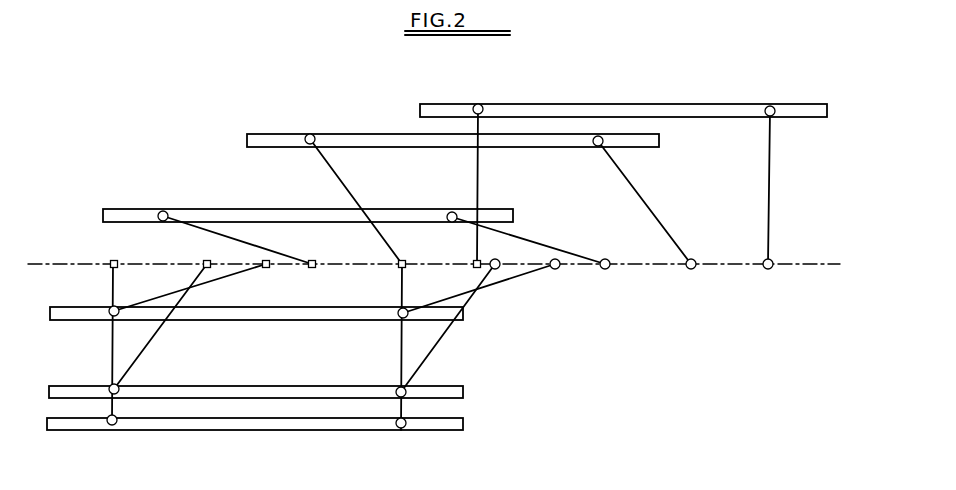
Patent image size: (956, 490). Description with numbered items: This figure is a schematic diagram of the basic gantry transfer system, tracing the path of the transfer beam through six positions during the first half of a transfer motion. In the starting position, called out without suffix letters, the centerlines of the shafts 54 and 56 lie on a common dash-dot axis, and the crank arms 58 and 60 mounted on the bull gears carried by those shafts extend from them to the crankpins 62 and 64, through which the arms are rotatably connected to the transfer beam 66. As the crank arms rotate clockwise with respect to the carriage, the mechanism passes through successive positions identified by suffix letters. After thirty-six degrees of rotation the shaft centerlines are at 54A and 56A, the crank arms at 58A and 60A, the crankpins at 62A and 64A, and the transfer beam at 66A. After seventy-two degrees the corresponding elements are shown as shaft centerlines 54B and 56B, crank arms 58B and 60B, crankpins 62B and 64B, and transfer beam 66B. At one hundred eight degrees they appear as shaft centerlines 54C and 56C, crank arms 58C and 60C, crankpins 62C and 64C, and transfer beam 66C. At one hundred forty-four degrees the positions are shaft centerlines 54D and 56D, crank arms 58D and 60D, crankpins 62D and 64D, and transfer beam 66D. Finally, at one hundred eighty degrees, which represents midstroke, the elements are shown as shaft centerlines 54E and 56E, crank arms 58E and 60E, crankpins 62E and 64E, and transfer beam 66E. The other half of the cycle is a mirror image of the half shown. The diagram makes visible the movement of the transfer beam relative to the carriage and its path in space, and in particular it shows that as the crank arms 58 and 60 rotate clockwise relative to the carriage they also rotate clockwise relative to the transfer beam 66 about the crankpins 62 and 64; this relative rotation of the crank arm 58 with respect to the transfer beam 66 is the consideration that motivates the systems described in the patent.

The shaft 54 is at (114, 259).
The shaft 54A is at (207, 259).
The shaft 54B is at (271, 266).
The shaft 54C is at (314, 270).
The shaft 54D is at (399, 262).
The shaft 54E is at (477, 270).
The shaft 56 is at (407, 262).
The shaft 56A is at (522, 246).
The shaft 56B is at (556, 270).
The shaft 56C is at (606, 270).
The shaft 56D is at (691, 270).
The shaft 56E is at (769, 270).
The crank arm 58 is at (111, 334).
The crank arm 58A is at (160, 329).
The crank arm 58B is at (227, 277).
The crank arm 58C is at (296, 258).
The crank arm 58D is at (346, 186).
The crank arm 58E is at (480, 183).
The crank arm 60 is at (399, 356).
The crank arm 60A is at (436, 347).
The crank arm 60B is at (508, 283).
The crank arm 60C is at (586, 257).
The crank arm 60D is at (656, 216).
The crank arm 60E is at (772, 190).
The crankpin 62 is at (110, 427).
The crankpin 62A is at (110, 389).
The crankpin 62B is at (110, 311).
The crankpin 62C is at (166, 211).
The crankpin 62D is at (306, 136).
The crankpin 62E is at (482, 107).
The crankpin 64 is at (402, 432).
The crankpin 64A is at (397, 392).
The crankpin 64B is at (398, 315).
The crankpin 64C is at (448, 216).
The crankpin 64D is at (596, 148).
The crankpin 64E is at (764, 112).
The transfer beam 66 is at (464, 431).
The transfer beam 66A is at (465, 394).
The transfer beam 66B is at (465, 318).
The transfer beam 66C is at (515, 217).
The transfer beam 66D is at (661, 141).
The transfer beam 66E is at (811, 104).